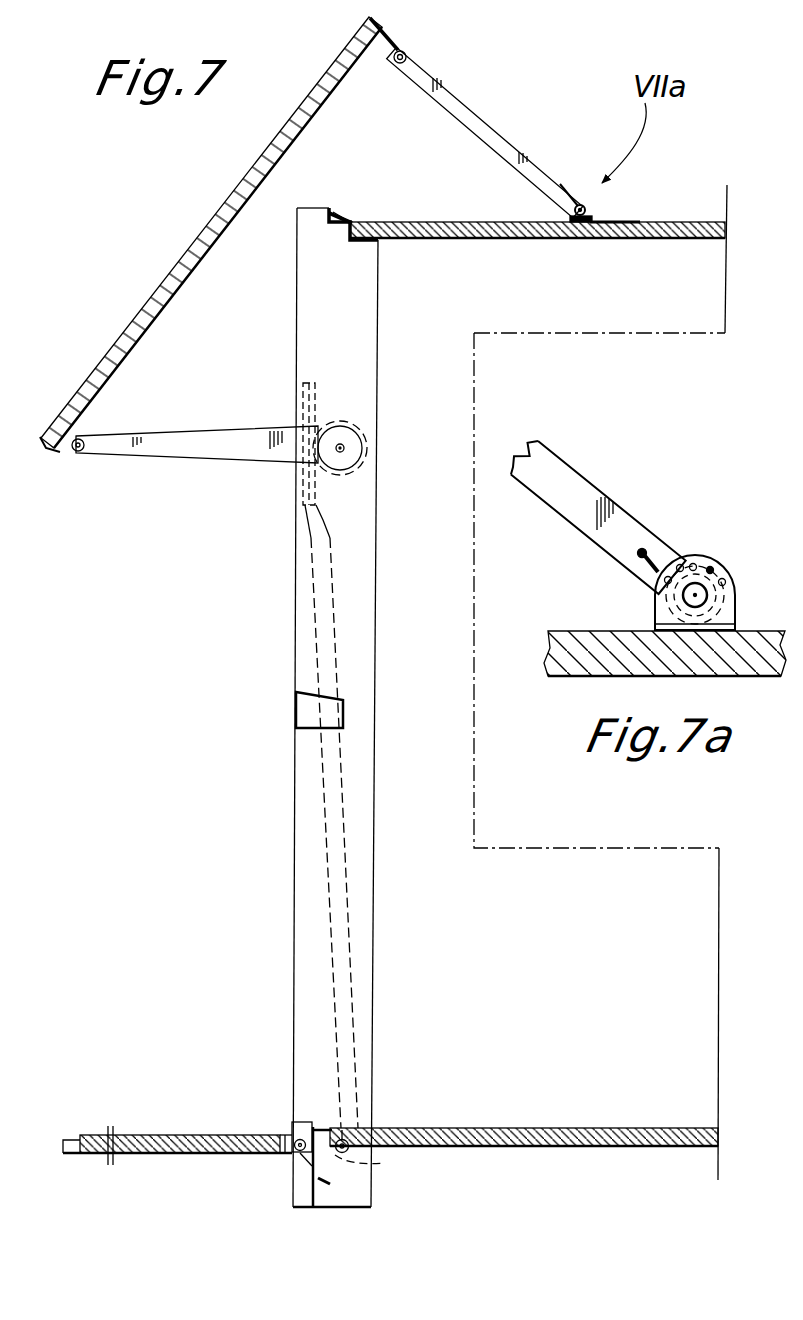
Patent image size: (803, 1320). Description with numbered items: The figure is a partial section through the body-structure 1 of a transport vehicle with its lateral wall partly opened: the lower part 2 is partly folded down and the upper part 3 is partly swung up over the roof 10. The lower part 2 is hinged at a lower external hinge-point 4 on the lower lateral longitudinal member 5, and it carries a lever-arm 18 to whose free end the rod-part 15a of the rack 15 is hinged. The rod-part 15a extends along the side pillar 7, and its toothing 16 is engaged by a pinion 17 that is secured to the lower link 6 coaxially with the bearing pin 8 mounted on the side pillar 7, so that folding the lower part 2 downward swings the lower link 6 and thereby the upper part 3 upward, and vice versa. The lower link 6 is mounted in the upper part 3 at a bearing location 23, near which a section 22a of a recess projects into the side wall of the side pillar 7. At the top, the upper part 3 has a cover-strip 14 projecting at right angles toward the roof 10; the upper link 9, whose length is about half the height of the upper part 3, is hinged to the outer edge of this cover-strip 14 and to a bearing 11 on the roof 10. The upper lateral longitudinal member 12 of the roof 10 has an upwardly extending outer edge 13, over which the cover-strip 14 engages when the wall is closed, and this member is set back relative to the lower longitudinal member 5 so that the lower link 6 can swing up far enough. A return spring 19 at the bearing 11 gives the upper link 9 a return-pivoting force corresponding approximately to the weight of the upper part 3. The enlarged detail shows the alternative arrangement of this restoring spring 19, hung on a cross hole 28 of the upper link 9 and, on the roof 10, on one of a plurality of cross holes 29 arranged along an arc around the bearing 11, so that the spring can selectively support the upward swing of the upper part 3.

In FIG. 7, the body-structure 1 is at (663, 222).
In FIG. 7, the lower part 2 is at (179, 1150).
In FIG. 7, the upper part 3 is at (152, 303).
In FIG. 7, the lower external hinge-point 4 is at (294, 1124).
In FIG. 7, the lower lateral longitudinal member 5 is at (330, 1178).
In FIG. 7, the lower link 6 is at (192, 452).
In FIG. 7, the side pillar 7 is at (368, 637).
In FIG. 7, the bearing pin 8 is at (344, 448).
In FIG. 7, the upper link 9 is at (493, 138).
In FIG. 7A, the upper link 9 is at (587, 498).
In FIG. 7, the roof 10 is at (623, 236).
In FIG. 7A, the roof 10 is at (567, 650).
In FIG. 7, the bearing 11 is at (590, 213).
In FIG. 7A, the bearing 11 is at (652, 562).
In FIG. 7, the upper lateral longitudinal member 12 is at (347, 214).
In FIG. 7, the outer edge 13 is at (328, 212).
In FIG. 7, the cover-strip 14 is at (394, 32).
In FIG. 7, the rack 15 is at (352, 870).
In FIG. 7, the rod-part 15a is at (337, 817).
In FIG. 7, the toothing 16 is at (313, 408).
In FIG. 7, the pinion 17 is at (367, 428).
In FIG. 7, the lever-arm 18 is at (388, 1163).
In FIG. 7, the return spring 19 is at (570, 200).
In FIG. 7, the section of recess 22a is at (338, 714).
In FIG. 7, the bearing location 23 is at (79, 454).
In FIG. 7A, the cross hole 28 is at (645, 550).
In FIG. 7A, the cross holes 29 is at (696, 564).